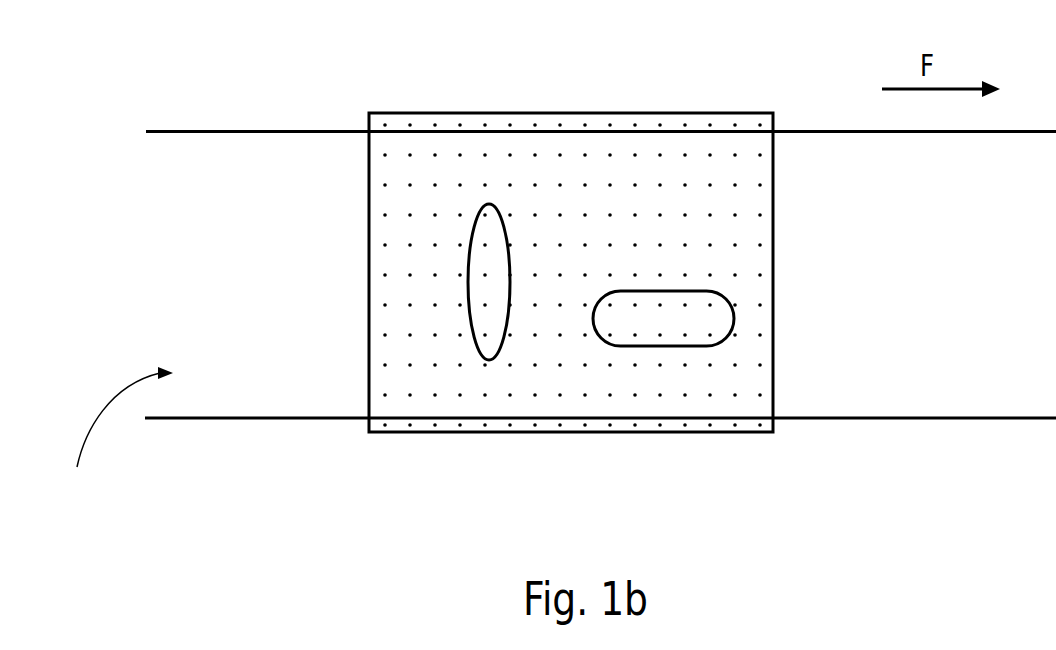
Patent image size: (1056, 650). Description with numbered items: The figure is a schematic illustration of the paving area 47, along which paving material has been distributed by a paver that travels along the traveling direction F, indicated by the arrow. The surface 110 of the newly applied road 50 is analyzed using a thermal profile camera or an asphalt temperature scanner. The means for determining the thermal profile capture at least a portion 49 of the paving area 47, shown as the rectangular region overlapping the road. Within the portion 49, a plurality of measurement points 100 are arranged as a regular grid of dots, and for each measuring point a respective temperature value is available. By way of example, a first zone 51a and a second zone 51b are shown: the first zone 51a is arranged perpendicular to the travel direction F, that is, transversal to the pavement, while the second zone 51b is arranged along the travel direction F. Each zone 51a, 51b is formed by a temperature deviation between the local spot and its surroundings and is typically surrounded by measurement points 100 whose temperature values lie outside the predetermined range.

The newly applied road 50 is at (600, 216).
The surface 110 is at (187, 165).
The portion 49 is at (478, 113).
The measurement points 100 is at (640, 215).
The first zone 51a is at (476, 344).
The second zone 51b is at (657, 346).
The paving area 47 is at (117, 435).